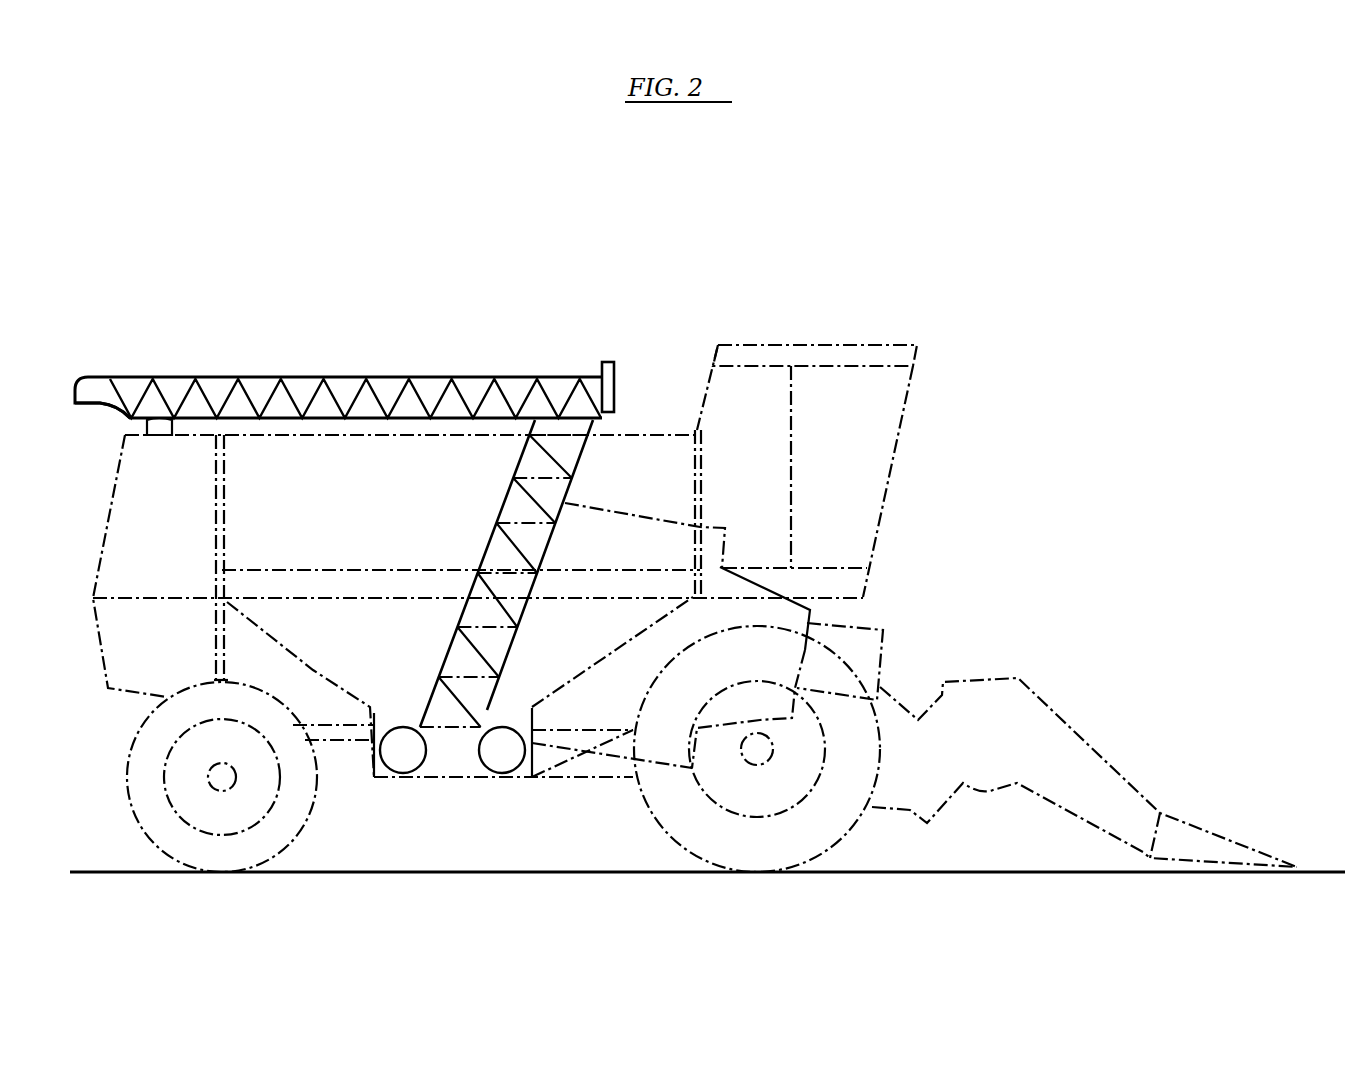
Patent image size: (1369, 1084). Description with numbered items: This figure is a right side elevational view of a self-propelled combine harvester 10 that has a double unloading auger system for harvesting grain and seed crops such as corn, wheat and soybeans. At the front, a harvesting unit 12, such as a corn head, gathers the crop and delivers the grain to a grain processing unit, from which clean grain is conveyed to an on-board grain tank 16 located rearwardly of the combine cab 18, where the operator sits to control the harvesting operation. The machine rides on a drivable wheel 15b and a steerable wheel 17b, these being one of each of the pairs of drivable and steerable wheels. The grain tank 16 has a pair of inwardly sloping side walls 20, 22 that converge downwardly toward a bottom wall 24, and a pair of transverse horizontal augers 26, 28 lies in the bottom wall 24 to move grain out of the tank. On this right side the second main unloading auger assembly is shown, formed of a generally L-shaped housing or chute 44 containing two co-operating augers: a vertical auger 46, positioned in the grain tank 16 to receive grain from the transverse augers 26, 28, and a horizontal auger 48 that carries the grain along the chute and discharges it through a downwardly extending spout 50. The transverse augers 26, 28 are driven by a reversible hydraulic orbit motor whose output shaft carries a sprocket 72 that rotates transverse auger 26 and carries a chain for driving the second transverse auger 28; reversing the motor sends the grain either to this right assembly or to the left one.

The combine harvester 10 is at (1012, 352).
The harvesting unit 12 is at (1080, 737).
The drivable wheel 15b is at (742, 853).
The grain tank 16 is at (375, 435).
The steerable wheel 17b is at (218, 853).
The combine cab 18 is at (897, 445).
The inwardly sloping side wall 20 is at (303, 668).
The inwardly sloping side wall 22 is at (597, 667).
The bottom wall 24 is at (472, 777).
The transverse auger 26 is at (498, 775).
The transverse auger 28 is at (400, 775).
The L-shaped housing or chute 44 is at (507, 492).
The vertical auger 46 is at (533, 500).
The horizontal auger 48 is at (438, 393).
The spout 50 is at (93, 407).
The sprocket 72 is at (620, 350).